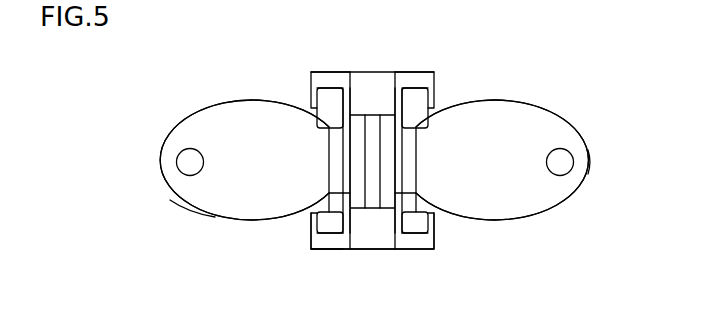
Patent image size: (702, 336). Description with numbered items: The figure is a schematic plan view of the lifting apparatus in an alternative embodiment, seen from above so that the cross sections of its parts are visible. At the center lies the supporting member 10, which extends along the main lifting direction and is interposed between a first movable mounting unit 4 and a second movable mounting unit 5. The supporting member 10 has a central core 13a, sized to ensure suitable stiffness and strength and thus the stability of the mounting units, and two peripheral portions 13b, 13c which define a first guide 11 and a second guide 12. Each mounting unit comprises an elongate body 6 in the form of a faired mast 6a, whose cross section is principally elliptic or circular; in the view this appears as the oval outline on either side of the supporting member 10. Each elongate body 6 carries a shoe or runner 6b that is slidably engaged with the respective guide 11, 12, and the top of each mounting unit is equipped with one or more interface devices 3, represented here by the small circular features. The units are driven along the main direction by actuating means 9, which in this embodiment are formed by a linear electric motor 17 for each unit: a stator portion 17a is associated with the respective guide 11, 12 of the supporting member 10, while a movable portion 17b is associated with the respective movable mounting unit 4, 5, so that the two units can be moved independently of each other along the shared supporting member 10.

The interface device 3 is at (183, 153).
The first movable mounting unit 4 is at (505, 169).
The second movable mounting unit 5 is at (264, 173).
The elongate body 6 is at (170, 188).
The faired mast 6a is at (192, 205).
The shoe or runner 6b is at (329, 98).
The actuating means 9 is at (372, 219).
The supporting member 10 is at (355, 252).
The first guide 11 is at (435, 238).
The second guide 12 is at (313, 247).
The central core 13a is at (356, 80).
The peripheral portion 13b is at (425, 77).
The peripheral portion 13c is at (328, 77).
The linear electric motor 17 is at (387, 109).
The stator portion 17a is at (356, 186).
The movable portion 17b is at (330, 163).